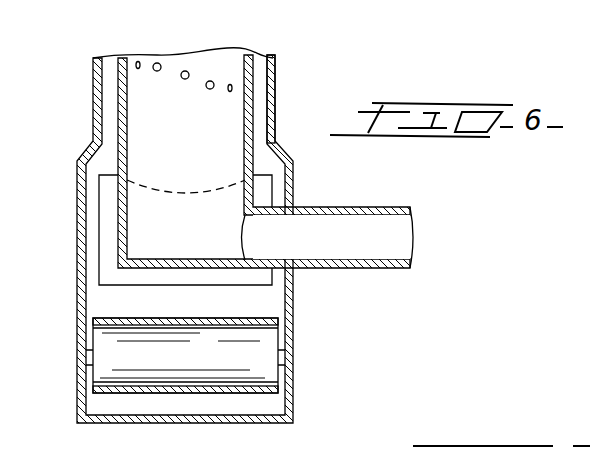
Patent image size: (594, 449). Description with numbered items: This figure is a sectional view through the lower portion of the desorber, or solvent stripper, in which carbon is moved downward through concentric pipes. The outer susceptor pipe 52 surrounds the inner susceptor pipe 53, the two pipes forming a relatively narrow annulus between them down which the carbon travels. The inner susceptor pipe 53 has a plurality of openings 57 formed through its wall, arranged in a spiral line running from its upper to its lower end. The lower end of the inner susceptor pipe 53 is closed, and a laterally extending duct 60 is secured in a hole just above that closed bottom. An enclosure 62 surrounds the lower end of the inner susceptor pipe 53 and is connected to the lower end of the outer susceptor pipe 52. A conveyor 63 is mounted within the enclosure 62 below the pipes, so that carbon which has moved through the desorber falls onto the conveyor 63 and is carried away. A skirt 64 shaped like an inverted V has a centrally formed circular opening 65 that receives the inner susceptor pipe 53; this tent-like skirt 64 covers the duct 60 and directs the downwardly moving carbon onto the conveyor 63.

The outer susceptor pipe 52 is at (273, 58).
The inner susceptor pipe 53 is at (250, 93).
The openings 57 is at (210, 81).
The laterally extending duct 60 is at (363, 208).
The enclosure 62 is at (70, 333).
The conveyor 63 is at (253, 320).
The skirt 64 is at (98, 192).
The circular opening 65 is at (203, 190).